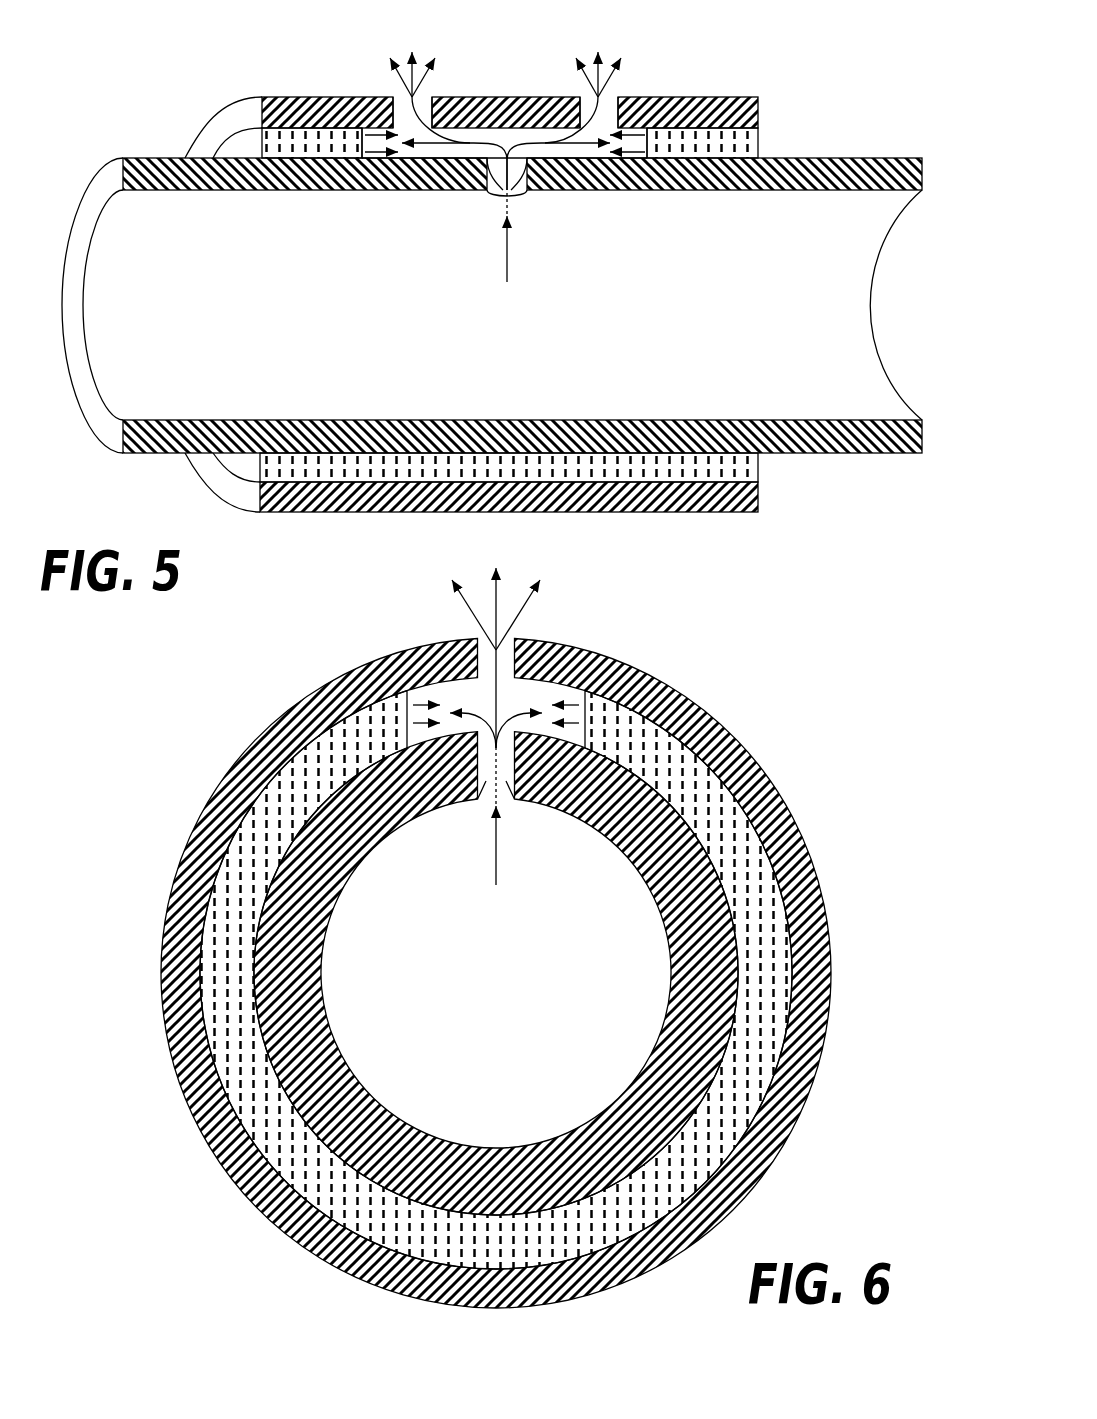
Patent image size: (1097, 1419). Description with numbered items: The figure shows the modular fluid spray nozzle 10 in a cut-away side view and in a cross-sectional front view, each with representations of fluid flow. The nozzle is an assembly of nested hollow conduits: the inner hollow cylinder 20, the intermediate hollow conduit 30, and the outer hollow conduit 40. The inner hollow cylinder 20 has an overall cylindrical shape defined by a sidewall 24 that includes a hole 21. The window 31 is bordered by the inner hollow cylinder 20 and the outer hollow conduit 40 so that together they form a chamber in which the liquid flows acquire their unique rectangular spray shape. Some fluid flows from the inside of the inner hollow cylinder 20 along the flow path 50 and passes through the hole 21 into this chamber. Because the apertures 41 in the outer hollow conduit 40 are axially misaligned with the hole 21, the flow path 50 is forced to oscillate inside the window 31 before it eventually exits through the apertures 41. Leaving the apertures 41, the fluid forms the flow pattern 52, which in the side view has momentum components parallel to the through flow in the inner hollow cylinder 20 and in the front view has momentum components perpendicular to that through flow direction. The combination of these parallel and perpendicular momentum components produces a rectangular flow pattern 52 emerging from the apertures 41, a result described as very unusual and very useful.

In FIG. 5, the modular fluid spray nozzle 10 is at (797, 64).
In FIG. 6, the modular fluid spray nozzle 10 is at (732, 688).
In FIG. 5, the inner hollow cylinder 20 is at (135, 320).
In FIG. 6, the inner hollow cylinder 20 is at (665, 830).
In FIG. 5, the hole 21 is at (492, 193).
In FIG. 6, the hole 21 is at (492, 808).
In FIG. 5, the sidewall 24 is at (97, 195).
In FIG. 6, the sidewall 24 is at (690, 882).
In FIG. 5, the intermediate hollow conduit 30 is at (688, 143).
In FIG. 6, the intermediate hollow conduit 30 is at (750, 1100).
In FIG. 5, the window 31 is at (490, 140).
In FIG. 6, the window 31 is at (453, 722).
In FIG. 5, the outer hollow conduit 40 is at (665, 98).
In FIG. 6, the outer hollow conduit 40 is at (243, 775).
In FIG. 5, the apertures 41 is at (400, 100).
In FIG. 6, the apertures 41 is at (535, 650).
In FIG. 5, the flow path 50 is at (625, 175).
In FIG. 6, the flow path 50 is at (499, 849).
In FIG. 5, the flow pattern 52 is at (425, 46).
In FIG. 6, the flow pattern 52 is at (512, 570).